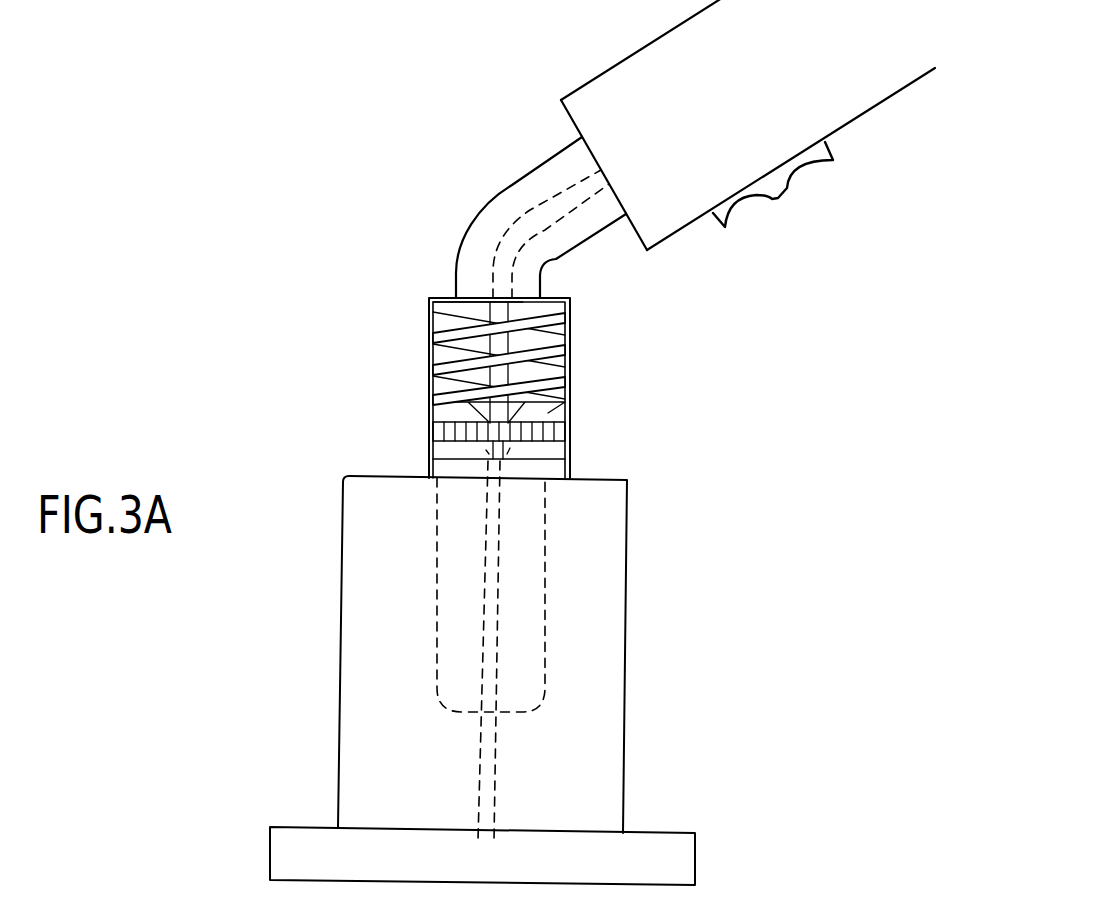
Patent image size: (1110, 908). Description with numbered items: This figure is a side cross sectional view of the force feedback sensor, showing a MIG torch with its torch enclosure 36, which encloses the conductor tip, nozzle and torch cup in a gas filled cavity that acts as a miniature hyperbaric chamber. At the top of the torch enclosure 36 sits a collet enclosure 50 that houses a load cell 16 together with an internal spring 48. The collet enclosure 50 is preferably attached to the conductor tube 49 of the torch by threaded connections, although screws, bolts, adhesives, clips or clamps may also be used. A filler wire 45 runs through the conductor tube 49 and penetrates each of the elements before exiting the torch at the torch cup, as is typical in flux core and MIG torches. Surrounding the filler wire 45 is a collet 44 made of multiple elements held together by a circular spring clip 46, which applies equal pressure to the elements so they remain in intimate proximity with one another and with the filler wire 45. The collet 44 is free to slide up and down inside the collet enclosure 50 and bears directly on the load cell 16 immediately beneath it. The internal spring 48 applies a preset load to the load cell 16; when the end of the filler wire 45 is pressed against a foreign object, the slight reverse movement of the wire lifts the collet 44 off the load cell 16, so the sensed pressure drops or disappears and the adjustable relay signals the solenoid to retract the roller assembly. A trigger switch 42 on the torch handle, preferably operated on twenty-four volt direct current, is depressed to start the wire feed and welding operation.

The load cell 16 is at (440, 468).
The torch enclosure 36 is at (603, 716).
The trigger switch 42 is at (773, 190).
The collet 44 is at (549, 417).
The filler wire 45 is at (502, 257).
The circular spring clip 46 is at (552, 436).
The internal spring 48 is at (552, 347).
The conductor tube 49 is at (512, 185).
The collet enclosure 50 is at (429, 423).